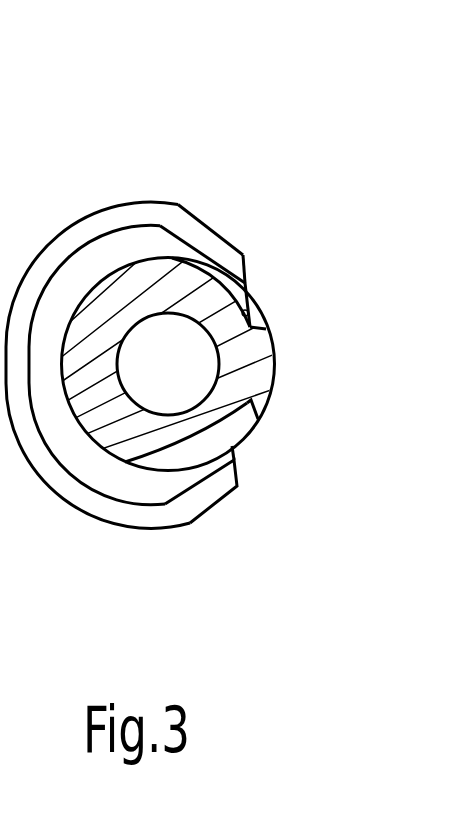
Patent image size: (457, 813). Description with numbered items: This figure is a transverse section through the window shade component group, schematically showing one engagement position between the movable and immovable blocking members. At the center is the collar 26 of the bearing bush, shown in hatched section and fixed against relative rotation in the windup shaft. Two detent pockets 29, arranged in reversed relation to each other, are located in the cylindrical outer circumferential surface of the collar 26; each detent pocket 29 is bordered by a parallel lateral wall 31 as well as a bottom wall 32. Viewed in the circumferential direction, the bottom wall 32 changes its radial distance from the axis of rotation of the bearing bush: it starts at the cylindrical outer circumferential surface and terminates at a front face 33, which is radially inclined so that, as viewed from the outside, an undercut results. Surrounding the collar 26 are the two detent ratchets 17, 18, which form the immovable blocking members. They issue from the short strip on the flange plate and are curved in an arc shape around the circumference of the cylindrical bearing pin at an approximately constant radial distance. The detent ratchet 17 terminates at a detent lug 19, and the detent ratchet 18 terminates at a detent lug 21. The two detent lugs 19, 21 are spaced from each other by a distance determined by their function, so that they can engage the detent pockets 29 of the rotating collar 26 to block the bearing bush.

The detent ratchet 17 is at (207, 237).
The detent ratchet 18 is at (178, 503).
The detent lug 19 is at (250, 265).
The detent lug 21 is at (238, 462).
The collar 26 is at (278, 368).
The detent pocket 29 is at (268, 243).
The lateral wall 31 is at (243, 292).
The bottom wall 32 is at (187, 272).
The front face 33 is at (252, 323).